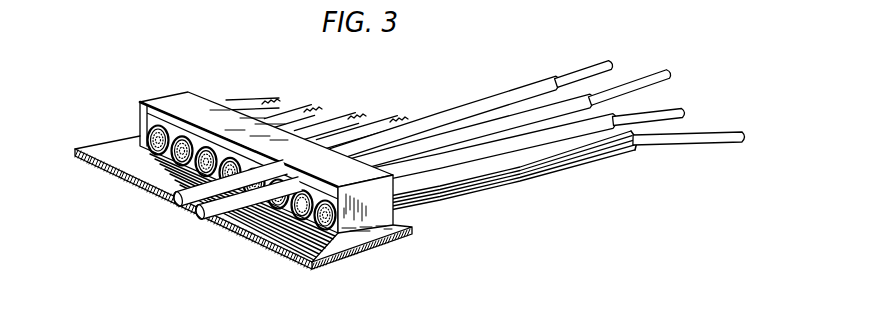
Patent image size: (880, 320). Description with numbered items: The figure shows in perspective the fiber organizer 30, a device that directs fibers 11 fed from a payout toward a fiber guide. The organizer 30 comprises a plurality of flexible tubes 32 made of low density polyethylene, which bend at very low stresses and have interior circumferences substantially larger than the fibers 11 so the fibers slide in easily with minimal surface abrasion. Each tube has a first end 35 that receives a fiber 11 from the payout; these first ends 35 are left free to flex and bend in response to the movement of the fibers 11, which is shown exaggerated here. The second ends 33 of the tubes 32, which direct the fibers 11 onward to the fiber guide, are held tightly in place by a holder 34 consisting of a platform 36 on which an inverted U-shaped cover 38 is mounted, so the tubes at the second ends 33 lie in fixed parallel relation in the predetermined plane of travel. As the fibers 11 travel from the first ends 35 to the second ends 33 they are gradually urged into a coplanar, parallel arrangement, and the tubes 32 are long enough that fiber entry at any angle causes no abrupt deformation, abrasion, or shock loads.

The fibers 11 is at (582, 72).
The fiber organizer 30 is at (171, 260).
The flexible tubes 32 is at (300, 113).
The second ends 33 is at (290, 252).
The holder 34 is at (390, 246).
The first ends 35 is at (636, 153).
The platform 36 is at (118, 141).
The inverted U-shaped cover 38 is at (170, 101).